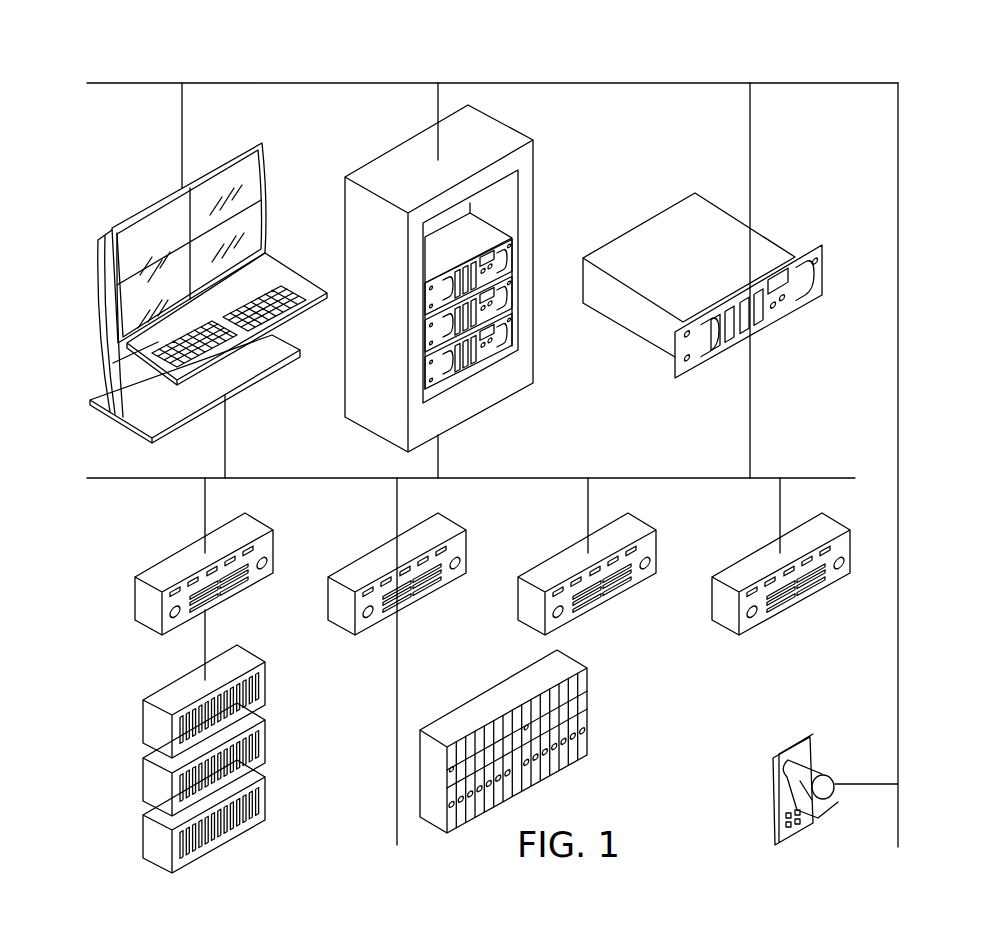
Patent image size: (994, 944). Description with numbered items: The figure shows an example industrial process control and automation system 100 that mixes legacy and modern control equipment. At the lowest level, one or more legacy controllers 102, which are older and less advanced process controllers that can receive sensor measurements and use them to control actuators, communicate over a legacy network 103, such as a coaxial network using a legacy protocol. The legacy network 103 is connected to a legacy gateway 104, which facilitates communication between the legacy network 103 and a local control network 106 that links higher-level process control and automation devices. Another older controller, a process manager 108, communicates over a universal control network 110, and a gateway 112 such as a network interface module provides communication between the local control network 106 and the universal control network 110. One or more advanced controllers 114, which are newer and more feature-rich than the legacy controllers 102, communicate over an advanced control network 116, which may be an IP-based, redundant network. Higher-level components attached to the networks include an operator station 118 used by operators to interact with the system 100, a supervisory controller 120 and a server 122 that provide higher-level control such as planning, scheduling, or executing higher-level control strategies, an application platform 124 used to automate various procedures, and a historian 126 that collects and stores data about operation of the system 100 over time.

The industrial process control and automation system 100 is at (628, 59).
The legacy controller 102 is at (159, 759).
The legacy network 103 is at (184, 654).
The legacy gateway 104 is at (162, 562).
The local control network 106 is at (298, 478).
The process manager 108 is at (490, 690).
The universal control network 110 is at (392, 697).
The gateway 112 is at (368, 553).
The advanced controller 114 is at (788, 745).
The advanced control network 116 is at (302, 83).
The operator station 118 is at (148, 205).
The supervisory controller 120 is at (343, 213).
The server 122 is at (638, 222).
The application platform 124 is at (558, 552).
The historian 126 is at (750, 552).